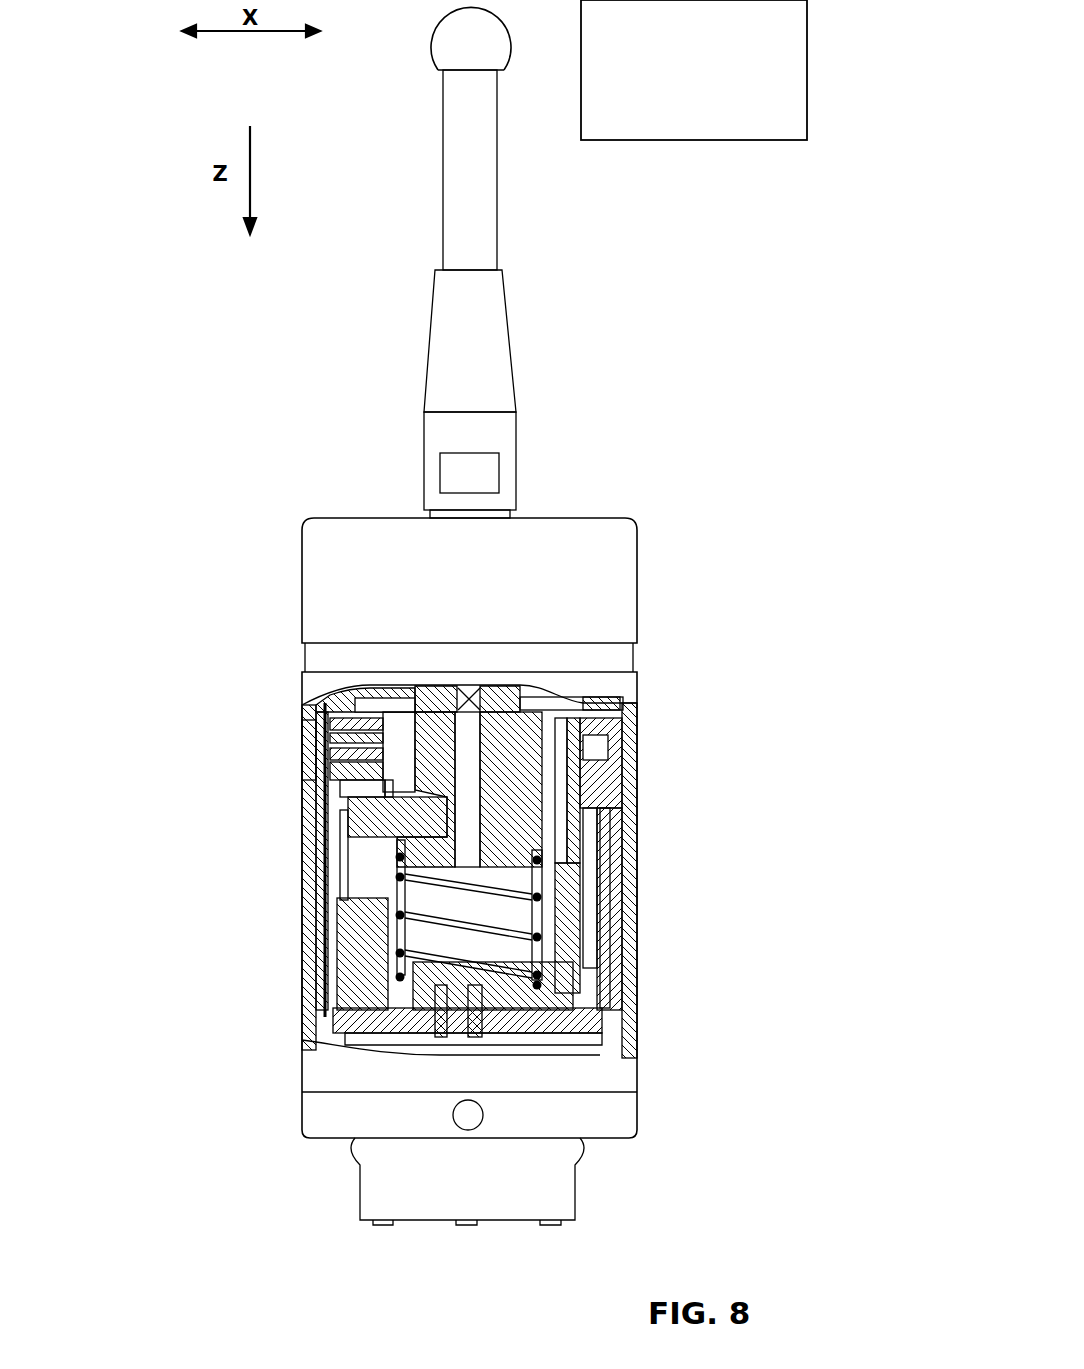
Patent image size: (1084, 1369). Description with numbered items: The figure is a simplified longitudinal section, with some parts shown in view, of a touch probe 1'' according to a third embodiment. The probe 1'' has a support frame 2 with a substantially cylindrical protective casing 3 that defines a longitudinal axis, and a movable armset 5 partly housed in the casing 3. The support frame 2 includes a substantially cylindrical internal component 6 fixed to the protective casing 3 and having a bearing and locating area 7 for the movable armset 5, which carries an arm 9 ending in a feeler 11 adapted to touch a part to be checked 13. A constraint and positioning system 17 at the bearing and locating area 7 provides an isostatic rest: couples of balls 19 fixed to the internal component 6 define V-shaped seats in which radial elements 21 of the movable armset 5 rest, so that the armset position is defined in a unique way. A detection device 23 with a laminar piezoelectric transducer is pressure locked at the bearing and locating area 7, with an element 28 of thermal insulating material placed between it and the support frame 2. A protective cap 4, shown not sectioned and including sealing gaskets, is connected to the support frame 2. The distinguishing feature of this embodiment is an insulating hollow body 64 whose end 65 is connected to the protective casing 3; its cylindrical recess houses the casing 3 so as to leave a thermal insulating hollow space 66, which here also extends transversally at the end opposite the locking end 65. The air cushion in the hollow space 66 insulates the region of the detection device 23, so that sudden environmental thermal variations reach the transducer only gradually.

The probe 1'' is at (653, 317).
The support frame 2 is at (650, 784).
The protective casing 3 is at (620, 940).
The protective cap 4 is at (330, 545).
The movable armset 5 is at (520, 778).
The internal component 6 is at (332, 932).
The bearing and locating area 7 is at (340, 793).
The arm 9 is at (460, 348).
The feeler 11 is at (448, 58).
The part to be checked 13 is at (685, 105).
The constraint and positioning system 17 is at (352, 856).
The balls 19 is at (350, 777).
The radial element 21 is at (375, 833).
The detection device 23 is at (337, 751).
The element made of thermal insulating material 28 is at (310, 737).
The insulating hollow body 64 is at (633, 820).
The end 65 is at (633, 975).
The thermal insulating hollow space 66 is at (337, 738).